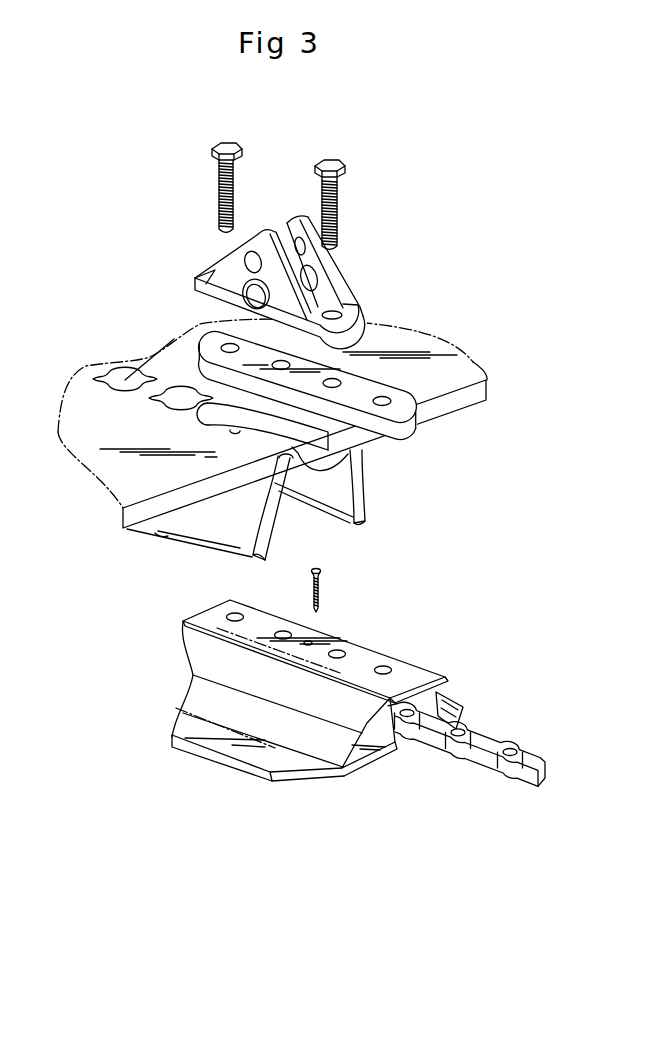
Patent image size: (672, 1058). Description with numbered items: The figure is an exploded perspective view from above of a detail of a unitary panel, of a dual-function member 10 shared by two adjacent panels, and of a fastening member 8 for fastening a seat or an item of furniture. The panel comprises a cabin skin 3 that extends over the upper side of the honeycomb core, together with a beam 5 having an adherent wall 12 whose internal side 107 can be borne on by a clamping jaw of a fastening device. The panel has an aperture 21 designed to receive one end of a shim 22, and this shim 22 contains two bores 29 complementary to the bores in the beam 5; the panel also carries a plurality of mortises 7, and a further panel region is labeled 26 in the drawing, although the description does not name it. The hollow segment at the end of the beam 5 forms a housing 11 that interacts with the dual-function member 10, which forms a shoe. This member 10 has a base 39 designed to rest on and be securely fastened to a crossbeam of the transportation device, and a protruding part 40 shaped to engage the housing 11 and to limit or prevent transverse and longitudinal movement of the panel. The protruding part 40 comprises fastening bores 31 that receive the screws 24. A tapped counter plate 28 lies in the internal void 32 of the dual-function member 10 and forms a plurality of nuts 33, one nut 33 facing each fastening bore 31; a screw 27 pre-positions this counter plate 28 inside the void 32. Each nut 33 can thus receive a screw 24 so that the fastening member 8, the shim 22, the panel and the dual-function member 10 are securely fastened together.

The cabin skin 3 is at (98, 432).
The beam 5 is at (363, 508).
The mortises 7 is at (180, 398).
The fastening member 8 is at (357, 309).
The dual-function member 10 is at (267, 677).
The housing 11 is at (313, 533).
The adherent wall 12 is at (258, 532).
The aperture 21 is at (355, 455).
The shim 22 is at (403, 417).
The screws 24 is at (223, 147).
The base plate 26 is at (455, 397).
The screw 27 is at (319, 590).
The tapped counter plate 28 is at (527, 768).
The bores 29 is at (231, 346).
The fastening bores 31 is at (235, 615).
The internal void 32 is at (412, 747).
The nuts 33 is at (458, 732).
The base 39 is at (273, 765).
The protruding part 40 is at (407, 673).
The internal side 107 is at (355, 495).